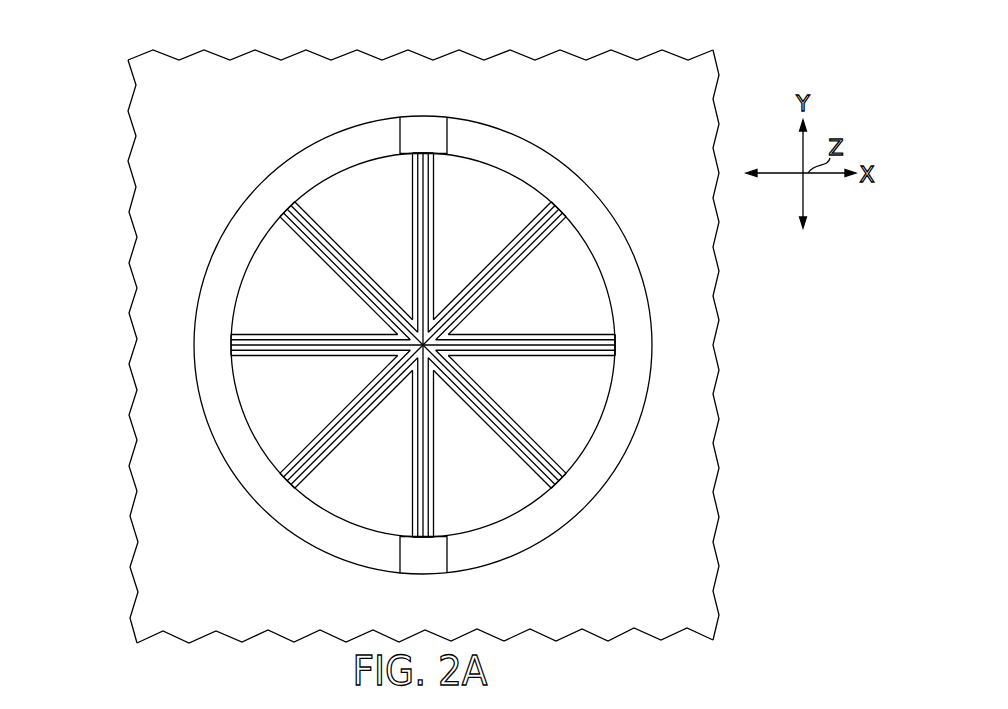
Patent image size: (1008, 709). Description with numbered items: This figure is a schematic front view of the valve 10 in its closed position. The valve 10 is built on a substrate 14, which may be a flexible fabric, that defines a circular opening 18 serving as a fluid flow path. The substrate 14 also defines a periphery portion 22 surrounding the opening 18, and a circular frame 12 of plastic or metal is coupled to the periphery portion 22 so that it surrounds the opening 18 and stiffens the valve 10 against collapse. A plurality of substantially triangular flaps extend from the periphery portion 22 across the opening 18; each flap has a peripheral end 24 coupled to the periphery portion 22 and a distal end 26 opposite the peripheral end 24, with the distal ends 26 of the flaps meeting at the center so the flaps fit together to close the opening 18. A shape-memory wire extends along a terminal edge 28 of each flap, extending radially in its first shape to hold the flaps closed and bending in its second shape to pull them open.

The valve 10 is at (88, 44).
The frame 12 is at (564, 167).
The substrate 14 is at (527, 344).
The opening 18 is at (409, 300).
The periphery portion 22 is at (605, 71).
The peripheral end 24 is at (616, 362).
The distal end 26 is at (450, 335).
The terminal edge 28 is at (532, 240).